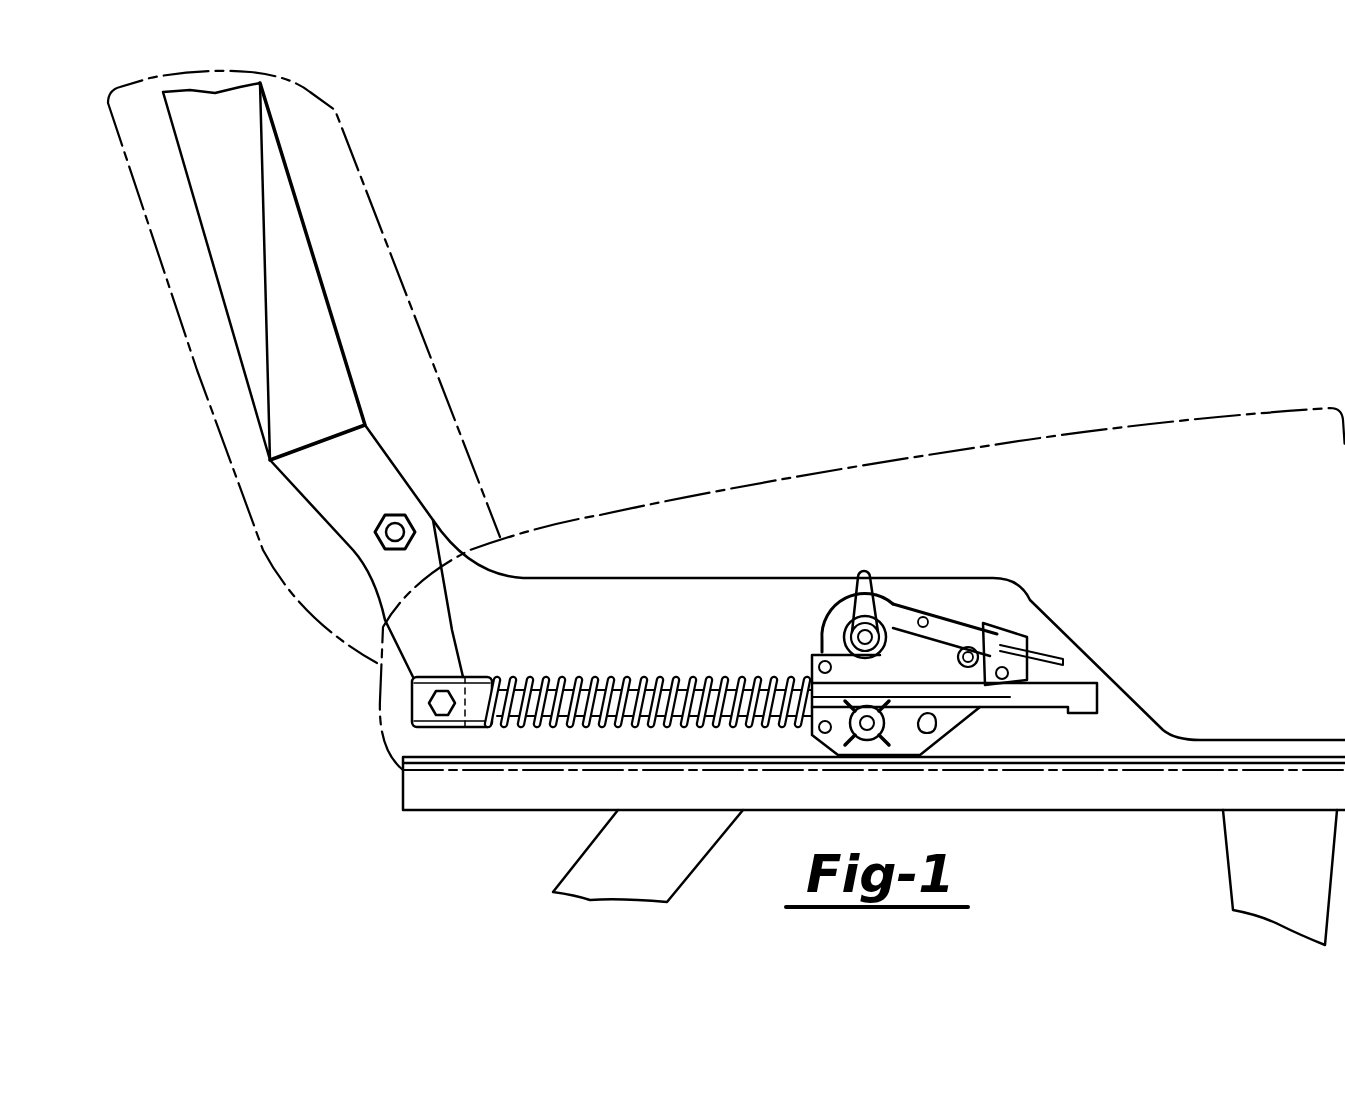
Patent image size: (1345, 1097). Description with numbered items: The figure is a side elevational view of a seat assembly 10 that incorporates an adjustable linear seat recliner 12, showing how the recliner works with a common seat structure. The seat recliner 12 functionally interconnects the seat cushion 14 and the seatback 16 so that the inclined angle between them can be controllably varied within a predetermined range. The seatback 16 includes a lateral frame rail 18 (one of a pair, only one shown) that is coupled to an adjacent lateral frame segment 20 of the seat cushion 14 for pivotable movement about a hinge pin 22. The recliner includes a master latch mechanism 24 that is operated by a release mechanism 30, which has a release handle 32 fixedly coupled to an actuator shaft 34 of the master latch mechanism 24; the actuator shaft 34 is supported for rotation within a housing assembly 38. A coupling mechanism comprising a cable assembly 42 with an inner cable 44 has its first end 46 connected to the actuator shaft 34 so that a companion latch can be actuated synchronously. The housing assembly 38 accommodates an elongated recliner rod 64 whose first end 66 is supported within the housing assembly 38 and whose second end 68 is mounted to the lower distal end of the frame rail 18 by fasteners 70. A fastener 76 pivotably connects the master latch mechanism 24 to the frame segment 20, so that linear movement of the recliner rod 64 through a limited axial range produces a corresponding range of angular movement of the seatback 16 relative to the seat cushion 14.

The seat assembly 10 is at (1040, 318).
The linear seat recliner 12 is at (670, 610).
The seat cushion 14 is at (1127, 452).
The seatback 16 is at (372, 250).
The lateral frame rail 18 is at (268, 163).
The lateral frame segment 20 is at (547, 603).
The hinge pin 22 is at (400, 528).
The master latch mechanism 24 is at (963, 595).
The release mechanism 30 is at (882, 562).
The release handle 32 is at (860, 572).
The actuator shaft 34 is at (845, 637).
The housing assembly 38 is at (962, 716).
The cable assembly 42 is at (1057, 622).
The inner cable 44 is at (1060, 660).
The first end 46 is at (900, 602).
The recliner rod 64 is at (588, 677).
The first end 66 is at (1085, 697).
The second end 68 is at (477, 703).
The fasteners 70 is at (440, 703).
The fastener 76 is at (867, 740).